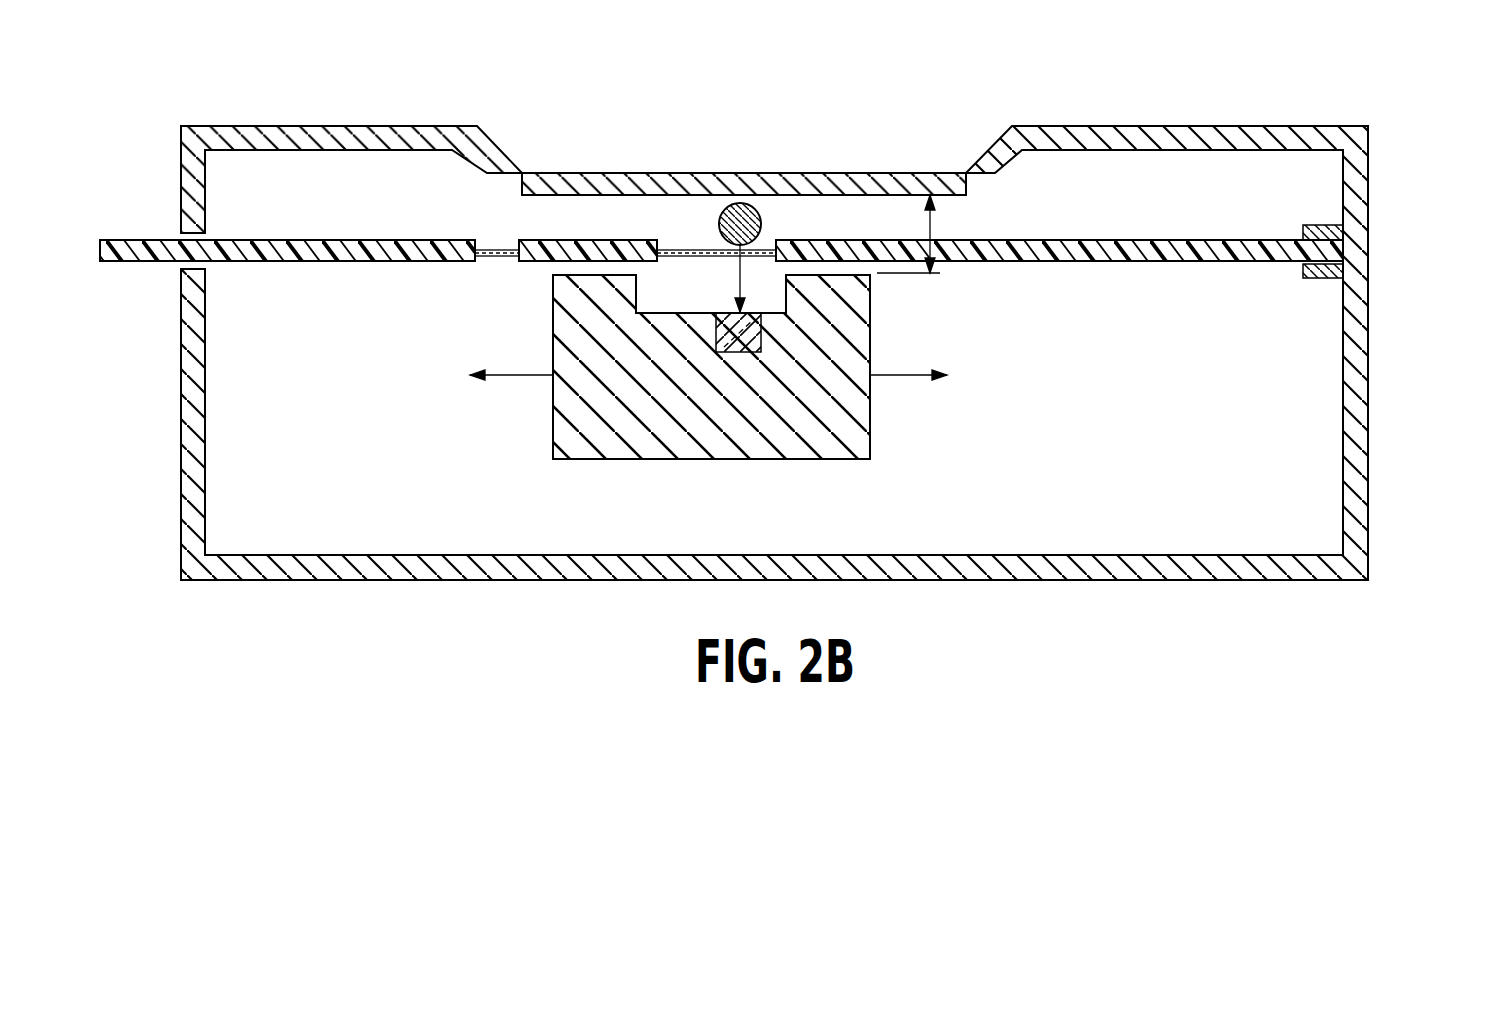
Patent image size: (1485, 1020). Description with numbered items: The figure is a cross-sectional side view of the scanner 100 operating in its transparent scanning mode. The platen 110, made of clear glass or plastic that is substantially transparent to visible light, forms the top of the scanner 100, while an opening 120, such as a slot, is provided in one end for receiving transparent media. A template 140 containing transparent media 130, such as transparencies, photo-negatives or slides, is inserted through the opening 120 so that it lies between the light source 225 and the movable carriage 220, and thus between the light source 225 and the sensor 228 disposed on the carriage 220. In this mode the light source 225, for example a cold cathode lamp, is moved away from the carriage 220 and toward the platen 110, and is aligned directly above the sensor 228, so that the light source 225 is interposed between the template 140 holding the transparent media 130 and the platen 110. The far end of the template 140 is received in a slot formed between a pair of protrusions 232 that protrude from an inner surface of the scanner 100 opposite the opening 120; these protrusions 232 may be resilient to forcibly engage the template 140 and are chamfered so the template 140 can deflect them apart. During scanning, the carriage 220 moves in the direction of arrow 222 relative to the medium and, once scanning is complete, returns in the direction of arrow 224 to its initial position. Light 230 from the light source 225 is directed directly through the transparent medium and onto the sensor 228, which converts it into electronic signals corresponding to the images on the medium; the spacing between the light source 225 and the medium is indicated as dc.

The scanner 100 is at (242, 138).
The platen 110 is at (568, 185).
The opening 120 is at (182, 237).
The template 140 is at (137, 257).
The transparent media 130 is at (690, 249).
The light source 225 is at (762, 223).
The light 230 is at (738, 277).
The movable carriage 220 is at (662, 460).
The sensor 228 is at (762, 332).
The arrow 222 is at (525, 377).
The arrow 224 is at (910, 372).
The protrusions 232 is at (1335, 273).
The gap distance d_c dc is at (935, 225).